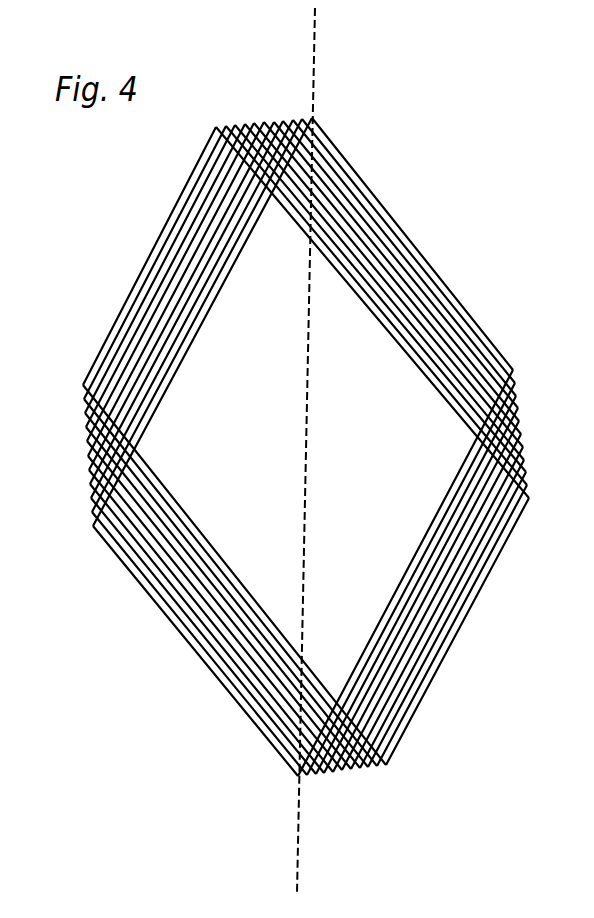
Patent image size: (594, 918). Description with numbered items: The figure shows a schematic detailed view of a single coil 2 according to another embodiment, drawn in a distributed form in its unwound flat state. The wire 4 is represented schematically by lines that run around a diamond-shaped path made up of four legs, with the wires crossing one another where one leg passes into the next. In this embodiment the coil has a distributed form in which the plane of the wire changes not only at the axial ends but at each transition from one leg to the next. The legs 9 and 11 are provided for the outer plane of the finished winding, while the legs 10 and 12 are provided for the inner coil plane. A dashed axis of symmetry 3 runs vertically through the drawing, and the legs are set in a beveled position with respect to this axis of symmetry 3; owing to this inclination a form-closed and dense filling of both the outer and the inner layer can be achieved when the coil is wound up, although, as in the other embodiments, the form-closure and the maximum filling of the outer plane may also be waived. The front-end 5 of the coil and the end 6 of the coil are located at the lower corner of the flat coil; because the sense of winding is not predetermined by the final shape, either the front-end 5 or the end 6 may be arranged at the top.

The single coil 2 is at (316, 447).
The axis of symmetry 3 is at (301, 450).
The wire 4 is at (423, 573).
The front-end of the coil 5 is at (285, 772).
The end of the coil 6 is at (380, 756).
The leg 9 is at (372, 308).
The leg 10 is at (413, 573).
The leg 11 is at (234, 580).
The leg 12 is at (197, 322).